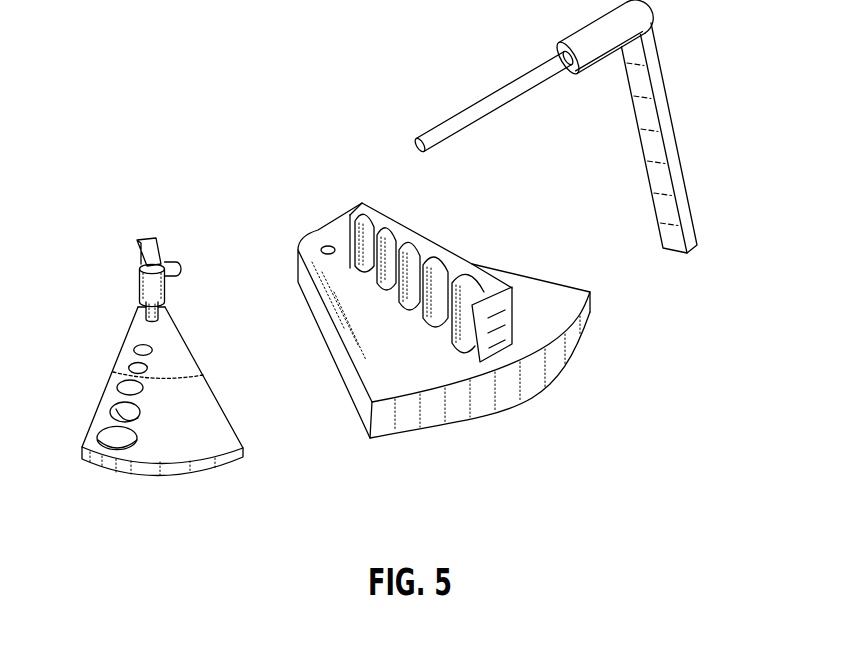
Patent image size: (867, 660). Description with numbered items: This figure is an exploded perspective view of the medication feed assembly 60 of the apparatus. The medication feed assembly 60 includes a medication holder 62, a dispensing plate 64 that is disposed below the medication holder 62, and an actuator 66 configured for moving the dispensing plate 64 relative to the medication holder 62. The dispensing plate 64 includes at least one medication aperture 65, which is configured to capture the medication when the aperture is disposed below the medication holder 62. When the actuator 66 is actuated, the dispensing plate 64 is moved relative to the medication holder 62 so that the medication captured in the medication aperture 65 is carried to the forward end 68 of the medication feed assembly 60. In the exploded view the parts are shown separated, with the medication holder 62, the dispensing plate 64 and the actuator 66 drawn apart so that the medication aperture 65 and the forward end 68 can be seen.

The medication feed assembly 60 is at (177, 107).
The medication holder 62 is at (500, 395).
The dispensing plate 64 is at (188, 427).
The medication aperture 65 is at (117, 447).
The actuator 66 is at (673, 135).
The forward end 68 is at (333, 342).